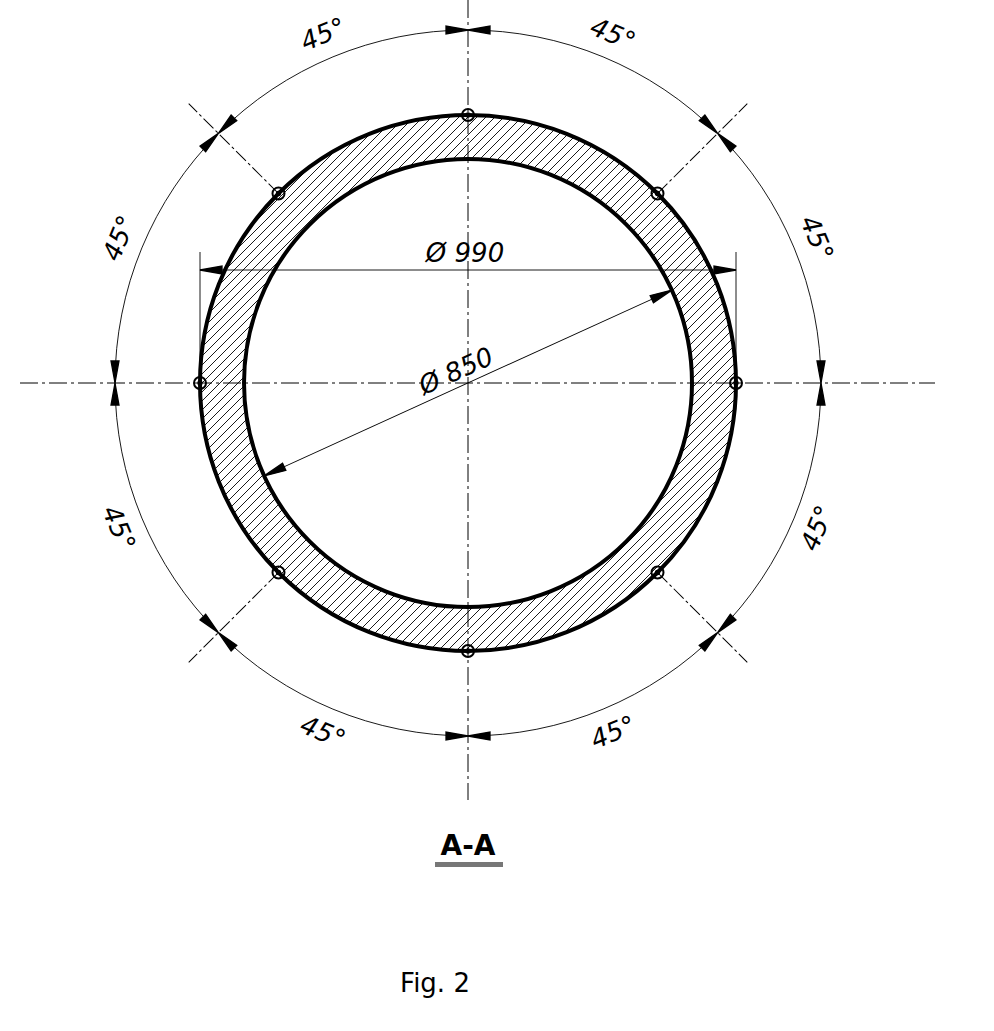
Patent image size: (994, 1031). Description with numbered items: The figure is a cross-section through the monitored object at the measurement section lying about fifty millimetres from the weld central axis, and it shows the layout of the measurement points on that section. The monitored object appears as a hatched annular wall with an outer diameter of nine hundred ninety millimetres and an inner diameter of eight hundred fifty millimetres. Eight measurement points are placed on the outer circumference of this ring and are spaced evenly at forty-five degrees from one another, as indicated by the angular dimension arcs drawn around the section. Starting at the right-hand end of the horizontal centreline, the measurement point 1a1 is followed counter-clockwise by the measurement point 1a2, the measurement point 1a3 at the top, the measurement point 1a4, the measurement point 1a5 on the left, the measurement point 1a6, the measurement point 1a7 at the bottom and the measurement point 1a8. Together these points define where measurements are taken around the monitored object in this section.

The measurement point 1a1 is at (755, 370).
The measurement point 1a2 is at (662, 174).
The measurement point 1a3 is at (486, 105).
The measurement point 1a4 is at (253, 191).
The measurement point 1a5 is at (175, 373).
The measurement point 1a6 is at (255, 575).
The measurement point 1a7 is at (439, 662).
The measurement point 1a8 is at (680, 576).